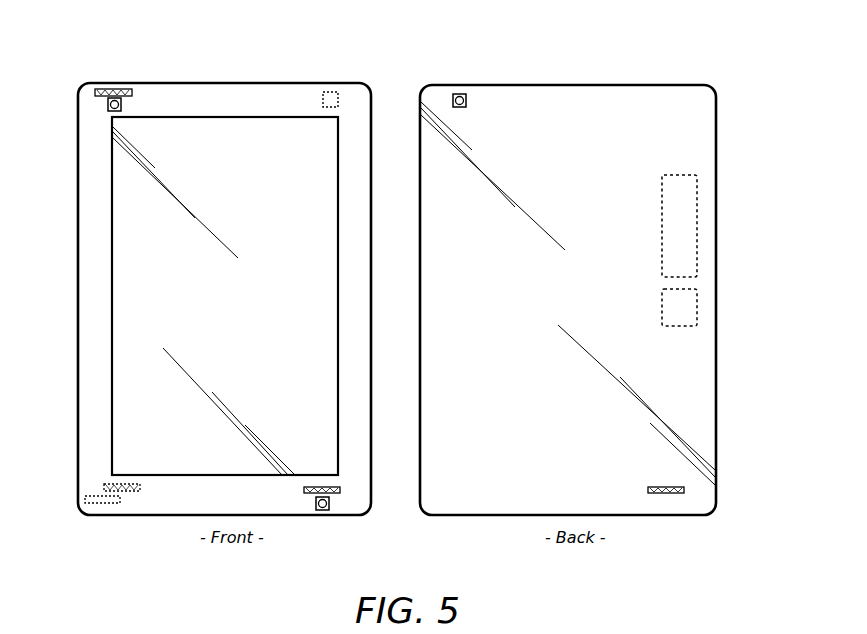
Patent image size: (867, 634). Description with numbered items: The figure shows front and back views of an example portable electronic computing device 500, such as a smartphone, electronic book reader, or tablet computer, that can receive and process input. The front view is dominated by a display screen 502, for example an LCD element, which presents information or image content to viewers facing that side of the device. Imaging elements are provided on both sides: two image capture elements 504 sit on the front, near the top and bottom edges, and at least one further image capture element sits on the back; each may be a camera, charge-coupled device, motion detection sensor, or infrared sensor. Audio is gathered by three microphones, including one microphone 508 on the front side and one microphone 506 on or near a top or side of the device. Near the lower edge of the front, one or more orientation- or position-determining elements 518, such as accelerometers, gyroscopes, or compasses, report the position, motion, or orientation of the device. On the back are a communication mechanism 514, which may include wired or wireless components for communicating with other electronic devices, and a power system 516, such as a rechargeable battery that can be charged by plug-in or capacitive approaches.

The electronic computing device 500 is at (737, 95).
The display screen 502 is at (112, 220).
The image capture element 504 is at (108, 104).
The microphone 506 is at (122, 90).
The microphone 508 is at (333, 493).
The communication mechanism 514 is at (697, 242).
The power system 516 is at (697, 311).
The orientation- or position-determining element 518 is at (100, 503).